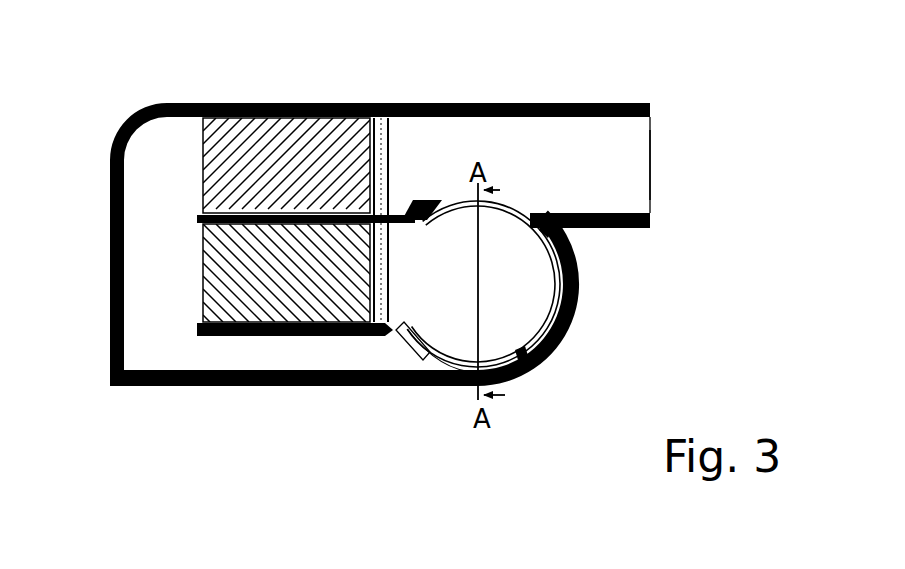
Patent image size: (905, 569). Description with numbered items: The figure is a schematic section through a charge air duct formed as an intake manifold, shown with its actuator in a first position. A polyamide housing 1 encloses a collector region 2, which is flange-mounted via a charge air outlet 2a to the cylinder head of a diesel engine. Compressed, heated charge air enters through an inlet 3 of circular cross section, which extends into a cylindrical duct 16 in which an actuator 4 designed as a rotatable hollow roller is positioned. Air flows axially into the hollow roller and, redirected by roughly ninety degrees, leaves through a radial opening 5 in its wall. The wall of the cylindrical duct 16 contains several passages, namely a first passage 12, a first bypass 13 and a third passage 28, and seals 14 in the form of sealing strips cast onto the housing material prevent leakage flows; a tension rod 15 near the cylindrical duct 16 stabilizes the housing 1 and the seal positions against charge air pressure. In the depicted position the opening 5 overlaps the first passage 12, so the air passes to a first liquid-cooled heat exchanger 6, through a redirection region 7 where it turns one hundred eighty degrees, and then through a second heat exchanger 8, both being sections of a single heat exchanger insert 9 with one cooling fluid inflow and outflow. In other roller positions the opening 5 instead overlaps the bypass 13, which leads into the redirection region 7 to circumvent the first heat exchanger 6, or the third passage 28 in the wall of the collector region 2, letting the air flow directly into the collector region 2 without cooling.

The housing 1 is at (283, 335).
The collector region 2 is at (531, 155).
The charge air outlet 2a is at (660, 165).
The inlet 3 is at (453, 307).
The actuator 4 is at (507, 358).
The opening 5 is at (405, 300).
The first liquid-cooled heat exchanger 6 is at (263, 295).
The redirection region 7 is at (164, 243).
The second heat exchanger 8 is at (305, 148).
The heat exchanger insert 9 is at (197, 253).
The first passage 12 is at (292, 329).
The first bypass 13 is at (417, 353).
The seals 14 is at (424, 210).
The tension rod 15 is at (383, 150).
The cylindrical duct 16 is at (537, 365).
The third passage 28 is at (517, 200).